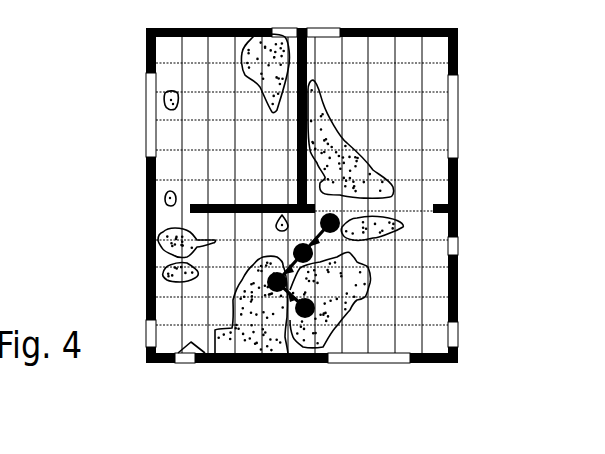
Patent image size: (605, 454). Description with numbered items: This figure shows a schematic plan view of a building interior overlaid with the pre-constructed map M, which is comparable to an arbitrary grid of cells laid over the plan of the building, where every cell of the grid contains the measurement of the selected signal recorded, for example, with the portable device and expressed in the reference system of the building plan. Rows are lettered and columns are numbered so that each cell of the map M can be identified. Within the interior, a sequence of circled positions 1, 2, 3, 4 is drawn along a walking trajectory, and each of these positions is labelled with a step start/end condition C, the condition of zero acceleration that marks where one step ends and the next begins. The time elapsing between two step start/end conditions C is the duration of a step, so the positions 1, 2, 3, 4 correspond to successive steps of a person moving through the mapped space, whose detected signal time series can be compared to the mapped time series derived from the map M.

The map M is at (304, 202).
The step start/end condition C is at (375, 307).
The first cleaning position 1 is at (305, 308).
The second cleaning position 2 is at (277, 282).
The third cleaning position 3 is at (303, 253).
The fourth cleaning position 4 is at (330, 223).